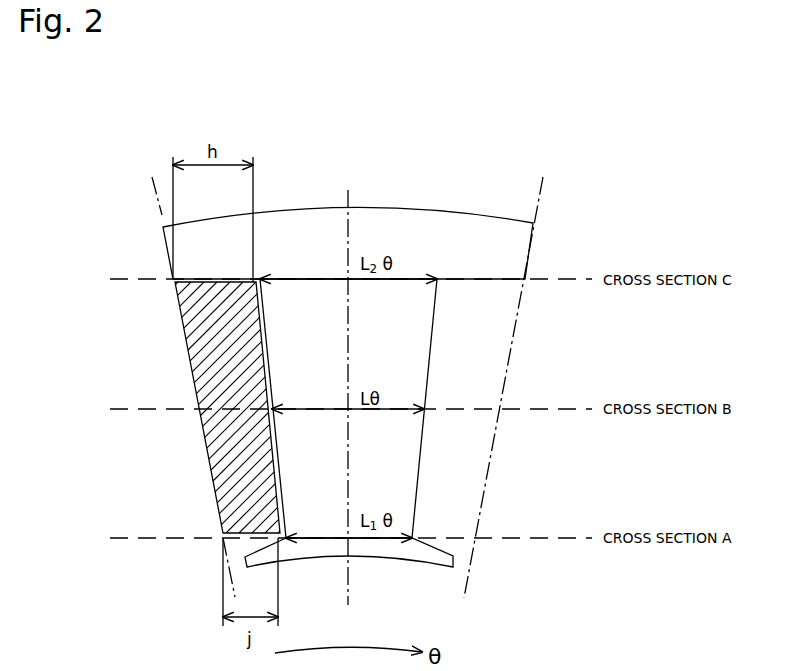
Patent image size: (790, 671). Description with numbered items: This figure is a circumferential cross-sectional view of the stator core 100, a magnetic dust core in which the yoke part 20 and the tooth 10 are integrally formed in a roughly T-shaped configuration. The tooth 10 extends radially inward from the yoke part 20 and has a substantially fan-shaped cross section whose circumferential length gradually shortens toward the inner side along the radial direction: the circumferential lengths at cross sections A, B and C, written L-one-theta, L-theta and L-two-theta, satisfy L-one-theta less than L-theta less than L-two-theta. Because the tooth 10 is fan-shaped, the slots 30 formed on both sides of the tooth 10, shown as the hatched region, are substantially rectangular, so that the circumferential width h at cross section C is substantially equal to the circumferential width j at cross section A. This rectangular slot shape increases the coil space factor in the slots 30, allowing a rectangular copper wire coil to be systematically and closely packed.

The stator core 100 is at (625, 141).
The tooth 10 is at (420, 464).
The yoke part 20 is at (405, 208).
The slot 30 is at (225, 454).